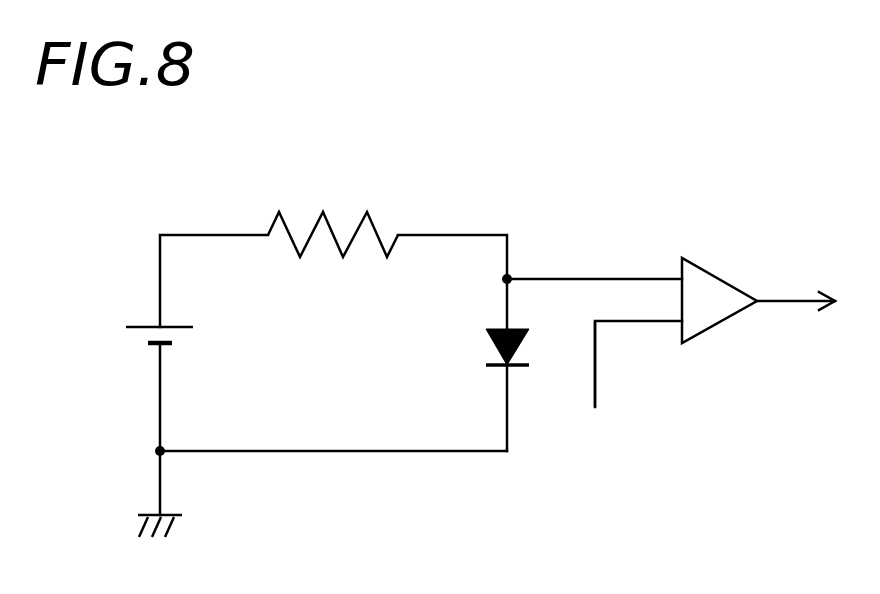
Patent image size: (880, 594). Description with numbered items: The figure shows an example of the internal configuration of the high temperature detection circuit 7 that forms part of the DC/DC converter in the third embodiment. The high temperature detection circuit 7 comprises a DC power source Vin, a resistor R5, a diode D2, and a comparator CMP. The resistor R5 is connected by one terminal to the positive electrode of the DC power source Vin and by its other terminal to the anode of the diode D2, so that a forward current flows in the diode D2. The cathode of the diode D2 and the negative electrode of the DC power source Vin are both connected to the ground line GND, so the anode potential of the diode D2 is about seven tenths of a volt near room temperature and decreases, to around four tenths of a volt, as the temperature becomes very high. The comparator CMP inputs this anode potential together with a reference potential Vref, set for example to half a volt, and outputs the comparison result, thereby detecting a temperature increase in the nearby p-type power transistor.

The high temperature detection circuit 7 is at (792, 171).
The resistor R5 is at (330, 212).
The diode D2 is at (486, 340).
The DC power source Vin is at (148, 315).
The reference potential Vref is at (627, 377).
The comparator CMP is at (713, 325).
The ground line GND is at (197, 525).